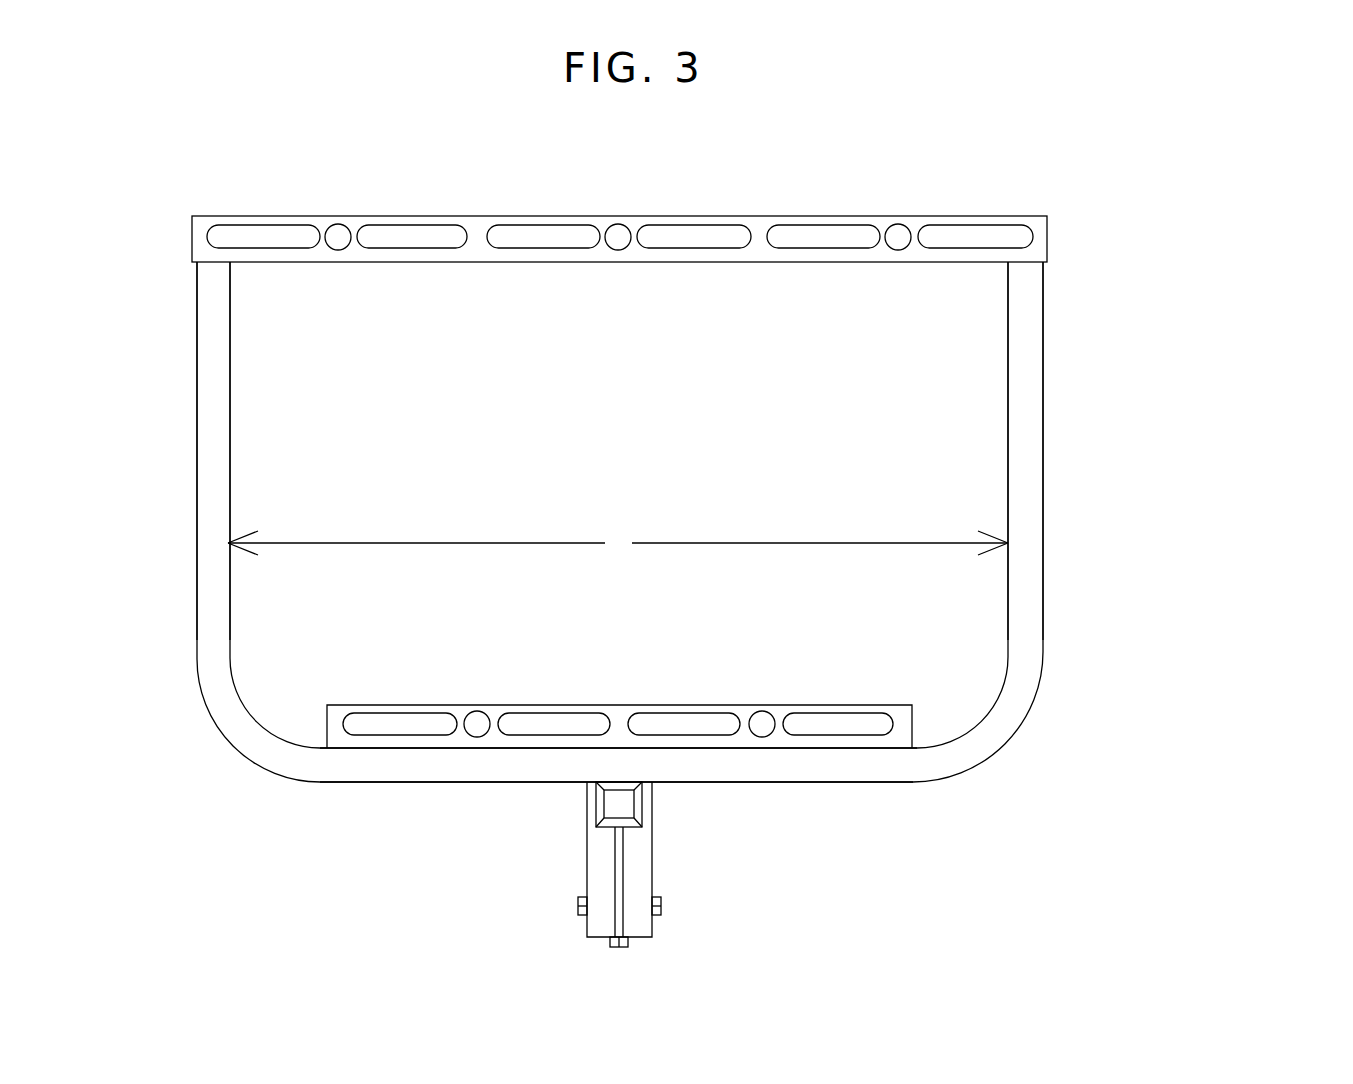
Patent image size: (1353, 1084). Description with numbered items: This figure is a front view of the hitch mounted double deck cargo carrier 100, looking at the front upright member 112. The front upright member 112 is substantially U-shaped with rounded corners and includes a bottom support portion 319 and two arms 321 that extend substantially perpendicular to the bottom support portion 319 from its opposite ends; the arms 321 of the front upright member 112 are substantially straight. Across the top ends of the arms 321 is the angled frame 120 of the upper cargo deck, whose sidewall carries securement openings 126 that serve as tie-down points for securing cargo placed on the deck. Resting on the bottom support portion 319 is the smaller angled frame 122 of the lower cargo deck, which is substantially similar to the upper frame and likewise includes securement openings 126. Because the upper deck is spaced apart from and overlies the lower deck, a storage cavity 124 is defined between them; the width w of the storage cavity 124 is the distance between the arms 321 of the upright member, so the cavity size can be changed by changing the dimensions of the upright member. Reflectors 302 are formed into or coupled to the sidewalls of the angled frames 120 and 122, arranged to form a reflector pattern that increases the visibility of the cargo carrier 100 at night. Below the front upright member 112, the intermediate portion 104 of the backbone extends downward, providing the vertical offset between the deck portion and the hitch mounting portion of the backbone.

The cargo carrier 100 is at (1143, 143).
The intermediate portion 104 is at (643, 866).
The front upright member 112 is at (1035, 474).
The angled frame 120 is at (755, 252).
The angled frame 122 is at (908, 706).
The storage cavity 124 is at (642, 459).
The securement openings 126 is at (956, 238).
The reflectors 302 is at (338, 240).
The bottom support portion 319 is at (872, 768).
The arms 321 is at (205, 472).